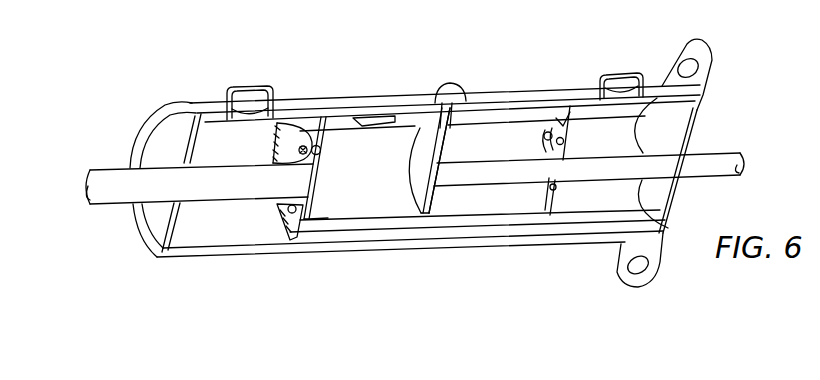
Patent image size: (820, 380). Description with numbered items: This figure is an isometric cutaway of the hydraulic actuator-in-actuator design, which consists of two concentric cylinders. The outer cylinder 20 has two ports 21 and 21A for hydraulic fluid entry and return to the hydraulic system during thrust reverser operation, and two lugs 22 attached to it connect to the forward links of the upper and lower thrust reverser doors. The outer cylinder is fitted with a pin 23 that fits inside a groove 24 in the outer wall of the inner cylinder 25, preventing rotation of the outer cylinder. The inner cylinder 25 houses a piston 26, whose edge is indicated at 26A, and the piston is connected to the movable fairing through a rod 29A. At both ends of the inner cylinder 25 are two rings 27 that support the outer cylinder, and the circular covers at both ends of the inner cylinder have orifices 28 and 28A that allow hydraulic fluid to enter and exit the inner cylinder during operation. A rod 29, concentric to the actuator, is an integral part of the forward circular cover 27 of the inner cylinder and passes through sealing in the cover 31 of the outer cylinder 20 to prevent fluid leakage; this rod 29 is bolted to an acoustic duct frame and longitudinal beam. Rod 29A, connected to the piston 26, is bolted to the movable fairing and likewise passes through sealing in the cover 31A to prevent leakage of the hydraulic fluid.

The outer cylinder 20 is at (318, 97).
The port 21 is at (244, 82).
The port 21A is at (608, 72).
The lug 22 is at (703, 38).
The pin 23 is at (448, 80).
The groove 24 is at (379, 118).
The inner cylinder 25 is at (329, 215).
The piston 26 is at (410, 180).
The disc edge 26A is at (450, 152).
The ring 27 is at (272, 136).
The orifice 28 is at (321, 150).
The orifice 28A is at (569, 140).
The rod 29 is at (112, 167).
The rod 29A is at (703, 153).
The cover 31 is at (161, 137).
The cover 31A is at (685, 115).